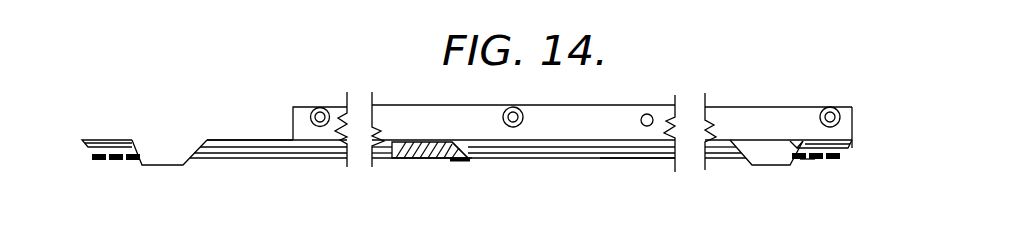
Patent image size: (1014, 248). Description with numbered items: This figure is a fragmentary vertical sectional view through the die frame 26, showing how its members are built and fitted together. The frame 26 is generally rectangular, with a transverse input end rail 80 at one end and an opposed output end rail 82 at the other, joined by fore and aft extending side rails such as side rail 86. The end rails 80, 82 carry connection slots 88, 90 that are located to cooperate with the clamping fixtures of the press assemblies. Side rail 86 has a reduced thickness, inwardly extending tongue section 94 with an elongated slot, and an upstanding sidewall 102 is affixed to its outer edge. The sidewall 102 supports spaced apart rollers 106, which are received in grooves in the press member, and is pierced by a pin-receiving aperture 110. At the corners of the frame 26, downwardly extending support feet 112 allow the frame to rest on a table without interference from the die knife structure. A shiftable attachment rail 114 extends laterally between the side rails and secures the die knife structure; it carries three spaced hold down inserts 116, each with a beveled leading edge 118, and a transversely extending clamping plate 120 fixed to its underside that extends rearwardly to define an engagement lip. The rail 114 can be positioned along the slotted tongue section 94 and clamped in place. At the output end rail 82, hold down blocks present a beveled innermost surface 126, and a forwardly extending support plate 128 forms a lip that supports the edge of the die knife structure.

The die frame 26 is at (620, 98).
The input end rail 80 is at (92, 152).
The output end rail 82 is at (843, 156).
The side rail 86 is at (648, 159).
The connection slot 88 is at (98, 141).
The connection slot 90 is at (843, 138).
The tongue section 94 is at (267, 150).
The sidewall 102 is at (722, 120).
The roller 106 is at (315, 108).
The pin-receiving aperture 110 is at (648, 113).
The support feet 112 is at (160, 160).
The attachment rail 114 is at (432, 142).
The hold down insert 116 is at (460, 142).
The beveled leading edge 118 is at (468, 158).
The clamping plate 120 is at (457, 161).
The beveled innermost surface 126 is at (797, 143).
The support plate 128 is at (808, 159).